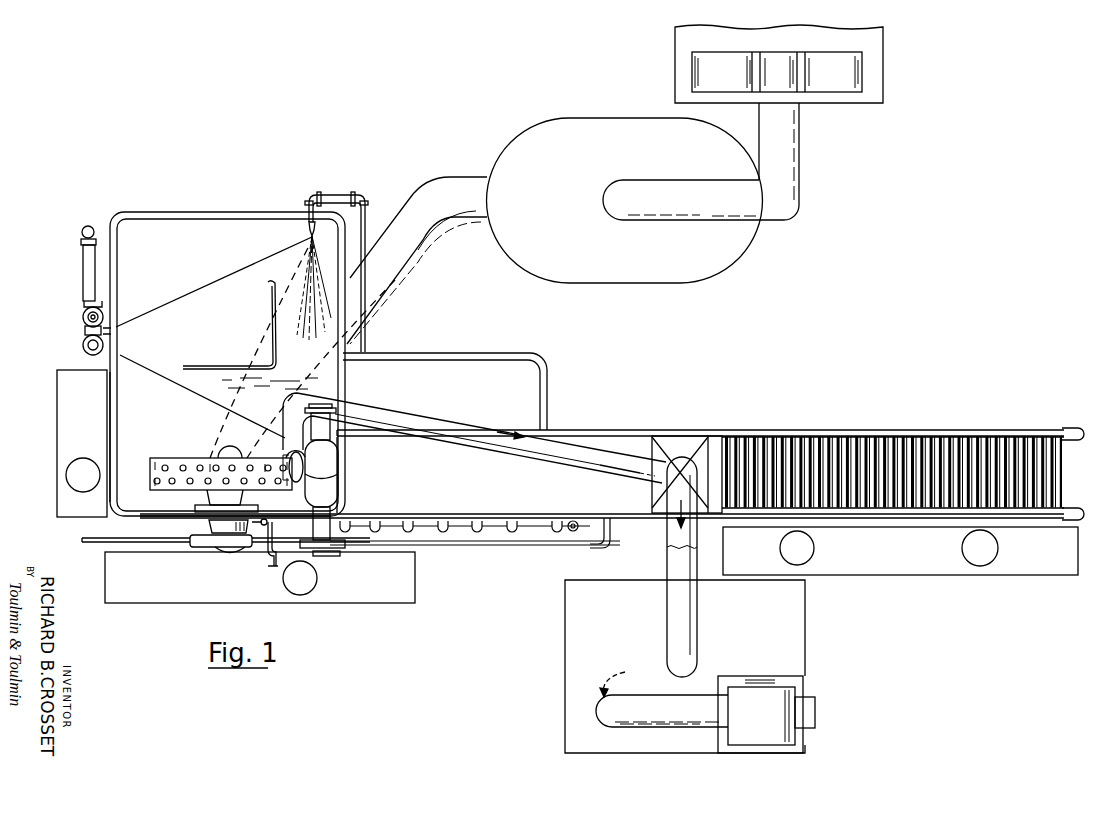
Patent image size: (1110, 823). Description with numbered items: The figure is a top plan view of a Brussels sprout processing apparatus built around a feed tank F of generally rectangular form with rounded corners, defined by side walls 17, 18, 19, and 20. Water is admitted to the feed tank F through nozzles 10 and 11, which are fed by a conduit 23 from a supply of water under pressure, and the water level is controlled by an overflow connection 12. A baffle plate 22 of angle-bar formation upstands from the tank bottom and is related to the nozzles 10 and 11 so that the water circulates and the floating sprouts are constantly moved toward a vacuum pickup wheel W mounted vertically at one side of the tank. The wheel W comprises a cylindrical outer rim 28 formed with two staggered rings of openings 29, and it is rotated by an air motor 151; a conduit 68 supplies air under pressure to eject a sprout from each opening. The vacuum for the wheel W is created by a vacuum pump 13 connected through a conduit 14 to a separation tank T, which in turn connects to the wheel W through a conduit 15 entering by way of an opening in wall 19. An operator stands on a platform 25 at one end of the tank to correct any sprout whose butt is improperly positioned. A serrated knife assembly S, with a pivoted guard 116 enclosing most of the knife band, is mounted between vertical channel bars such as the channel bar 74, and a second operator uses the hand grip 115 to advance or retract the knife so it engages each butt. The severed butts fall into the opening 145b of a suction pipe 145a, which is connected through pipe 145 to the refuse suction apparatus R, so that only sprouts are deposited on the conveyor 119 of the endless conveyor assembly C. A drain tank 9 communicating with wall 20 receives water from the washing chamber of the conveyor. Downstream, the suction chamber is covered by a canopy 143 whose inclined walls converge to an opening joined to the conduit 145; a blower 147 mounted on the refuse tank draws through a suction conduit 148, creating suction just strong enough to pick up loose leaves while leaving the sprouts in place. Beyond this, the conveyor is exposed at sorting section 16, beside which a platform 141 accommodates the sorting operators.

The feed tank F is at (222, 208).
The side wall 17 is at (247, 217).
The side wall 18 is at (113, 387).
The side wall 19 is at (144, 520).
The platform 25 is at (64, 410).
The overflow connection 12 is at (108, 327).
The side wall 20 is at (366, 222).
The conduit 23 is at (365, 334).
The nozzle 10 is at (307, 238).
The baffle plate 22 is at (270, 315).
The nozzle 11 is at (319, 384).
The conduit 15 is at (433, 193).
The separation tank T is at (577, 118).
The conduit 14 is at (784, 181).
The vacuum pump 13 is at (842, 84).
The drain tank 9 is at (459, 352).
The endless conveyor C is at (587, 420).
The suction pipe 145a is at (645, 465).
The channel bar 74 is at (334, 411).
The guard 116 is at (331, 458).
The serrated knife assembly S is at (340, 471).
The opening 145b is at (340, 481).
The hand grip 115 is at (334, 556).
The outer rim 28 is at (153, 462).
The vacuum pickup wheel W is at (183, 456).
The openings 29 is at (200, 466).
The air motor 151 is at (212, 540).
The conduit 68 is at (253, 548).
The canopy 143 is at (697, 441).
The conduit 145 is at (672, 597).
The exposed section 16 is at (818, 440).
The conveyor 119 is at (858, 448).
The platform 141 is at (915, 564).
The refuse suction apparatus R is at (810, 640).
The blower 147 is at (782, 701).
The suction conduit 148 is at (620, 674).